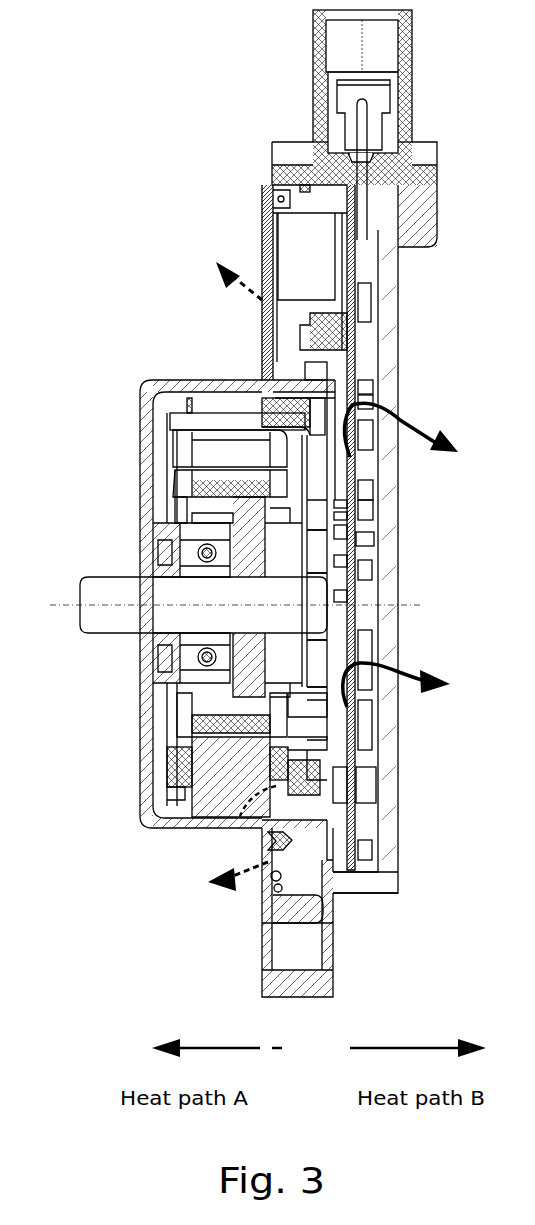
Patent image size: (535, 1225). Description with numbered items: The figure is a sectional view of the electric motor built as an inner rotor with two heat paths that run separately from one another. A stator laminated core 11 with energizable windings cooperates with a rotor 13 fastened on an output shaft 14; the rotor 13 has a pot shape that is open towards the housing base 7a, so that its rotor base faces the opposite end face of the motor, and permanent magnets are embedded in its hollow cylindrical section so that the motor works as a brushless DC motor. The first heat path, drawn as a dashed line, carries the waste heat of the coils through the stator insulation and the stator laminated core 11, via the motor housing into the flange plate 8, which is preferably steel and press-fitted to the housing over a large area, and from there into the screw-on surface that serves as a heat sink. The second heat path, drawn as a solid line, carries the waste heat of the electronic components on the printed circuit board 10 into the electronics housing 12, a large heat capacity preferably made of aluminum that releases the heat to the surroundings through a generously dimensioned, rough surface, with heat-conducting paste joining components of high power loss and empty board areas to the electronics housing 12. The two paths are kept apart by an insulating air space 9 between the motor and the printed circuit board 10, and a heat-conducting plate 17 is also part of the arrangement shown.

The housing base 7a is at (140, 750).
The flange plate 8 is at (262, 220).
The air space 9 is at (388, 538).
The printed circuit board 10 is at (385, 500).
The stator laminated core 11 is at (140, 396).
The electronics housing 12 is at (408, 325).
The rotor 13 is at (140, 520).
The output shaft 14 is at (128, 607).
The heat-conducting plate 17 is at (262, 220).